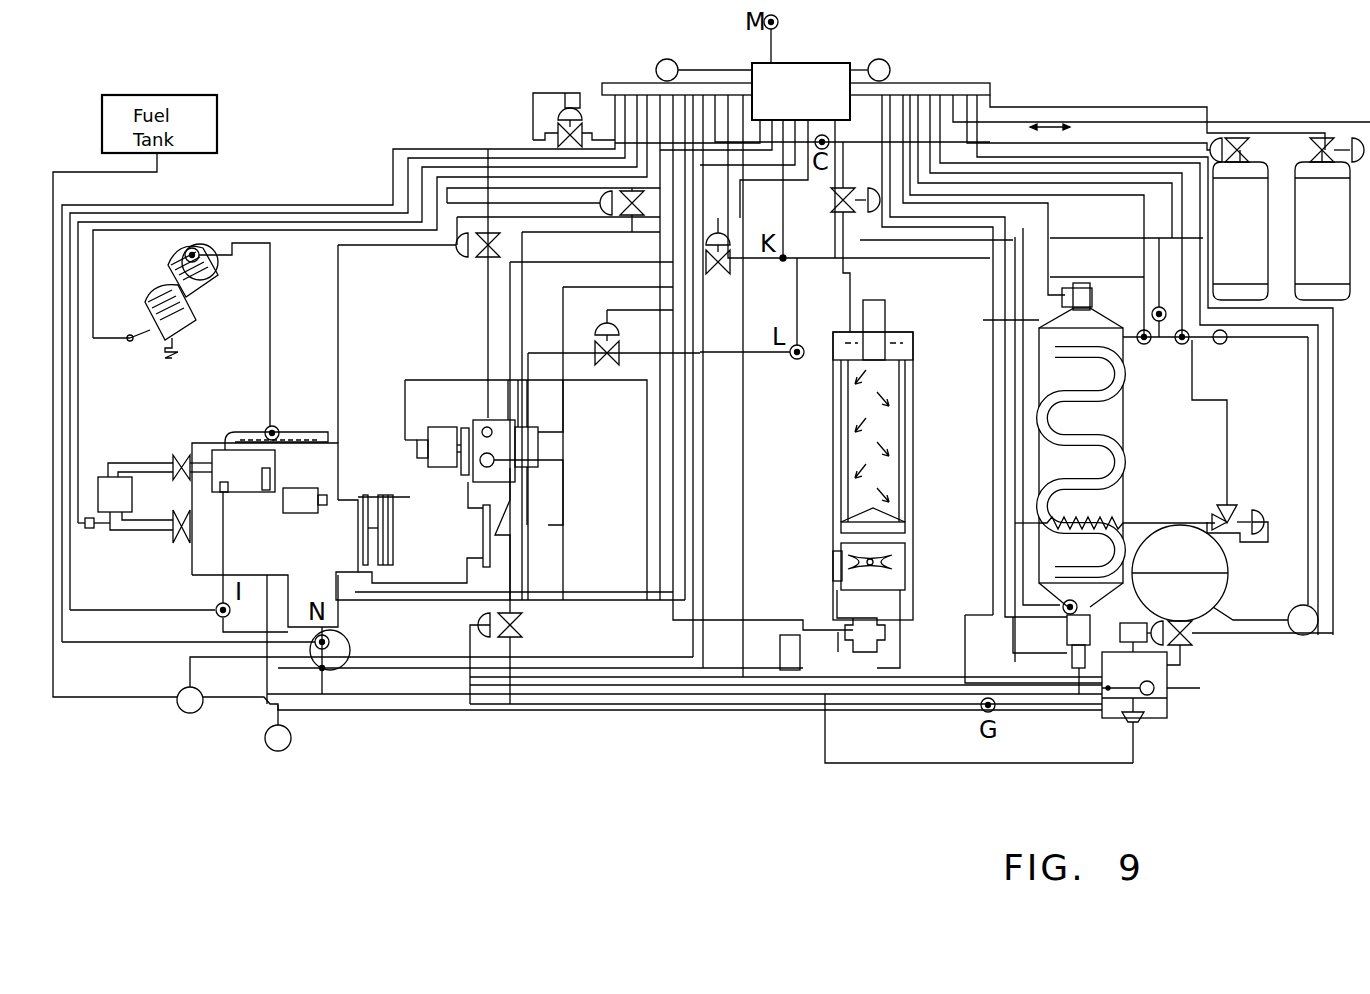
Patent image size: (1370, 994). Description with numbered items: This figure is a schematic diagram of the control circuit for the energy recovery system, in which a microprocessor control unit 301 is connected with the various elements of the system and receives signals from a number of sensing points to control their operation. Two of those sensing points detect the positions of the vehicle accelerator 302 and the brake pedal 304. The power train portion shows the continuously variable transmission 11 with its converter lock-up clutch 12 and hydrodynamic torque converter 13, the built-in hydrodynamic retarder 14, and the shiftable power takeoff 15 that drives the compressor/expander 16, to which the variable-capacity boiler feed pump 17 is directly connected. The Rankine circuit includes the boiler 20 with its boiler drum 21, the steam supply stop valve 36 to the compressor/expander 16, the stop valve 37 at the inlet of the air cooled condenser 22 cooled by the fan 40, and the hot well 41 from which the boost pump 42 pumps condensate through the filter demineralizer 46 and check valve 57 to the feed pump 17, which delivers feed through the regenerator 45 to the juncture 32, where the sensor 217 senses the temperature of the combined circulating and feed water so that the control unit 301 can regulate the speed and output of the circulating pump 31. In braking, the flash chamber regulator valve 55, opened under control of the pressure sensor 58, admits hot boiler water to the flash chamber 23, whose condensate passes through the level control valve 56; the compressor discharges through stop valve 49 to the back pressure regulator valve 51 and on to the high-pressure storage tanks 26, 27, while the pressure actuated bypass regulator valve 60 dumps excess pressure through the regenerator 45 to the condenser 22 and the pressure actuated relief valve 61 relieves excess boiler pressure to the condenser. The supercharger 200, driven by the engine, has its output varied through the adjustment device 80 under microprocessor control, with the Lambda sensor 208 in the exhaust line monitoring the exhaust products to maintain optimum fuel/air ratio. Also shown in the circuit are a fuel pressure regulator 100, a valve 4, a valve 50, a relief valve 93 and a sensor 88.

The fuel pressure regulator 100 is at (573, 106).
The back pressure regulator valve 51 is at (584, 136).
The sensor 88 is at (666, 59).
The microprocessor control unit 301 is at (841, 63).
The stop valve 49 is at (455, 252).
The valve 50 is at (620, 214).
The stop valve 36 is at (733, 254).
The pressure actuated bypass regulator valve 60 is at (847, 188).
The valve 4 is at (616, 354).
The regenerator 45 is at (896, 330).
The condenser 22 is at (833, 402).
The hot well 41 is at (841, 526).
The stop valve 37 is at (833, 567).
The fan 40 is at (905, 565).
The boost pump 42 is at (880, 638).
The check valve 57 is at (838, 650).
The filter demineralizer 46 is at (780, 652).
The high-pressure storage tank 26 is at (1255, 241).
The high-pressure storage tank 27 is at (1337, 241).
The relief valve 93 is at (1092, 298).
The boiler 20 is at (1102, 409).
The juncture 32 is at (1160, 345).
The sensor 217 is at (1226, 343).
The pressure actuated relief valve 61 is at (1260, 510).
The boiler drum 21 is at (1226, 592).
The circulating pump 31 is at (1303, 636).
The flash chamber regulator valve 55 is at (1190, 645).
The pressure sensor 58 is at (1133, 642).
The flash chamber 23 is at (490, 560).
The level control valve 56 is at (1145, 718).
The adjustment device 80 is at (132, 490).
The supercharger 200 is at (265, 512).
The Lambda sensor 208 is at (350, 646).
The continuously variable transmission 11 is at (438, 557).
The converter lock-up clutch 12 is at (365, 495).
The hydrodynamic torque converter 13 is at (383, 495).
The hydrodynamic retarder 14 is at (390, 495).
The shiftable power takeoff 15 is at (452, 460).
The compressor/expander 16 is at (473, 420).
The boiler feed pump 17 is at (540, 447).
The vehicle accelerator 302 is at (160, 345).
The brake pedal 304 is at (205, 292).